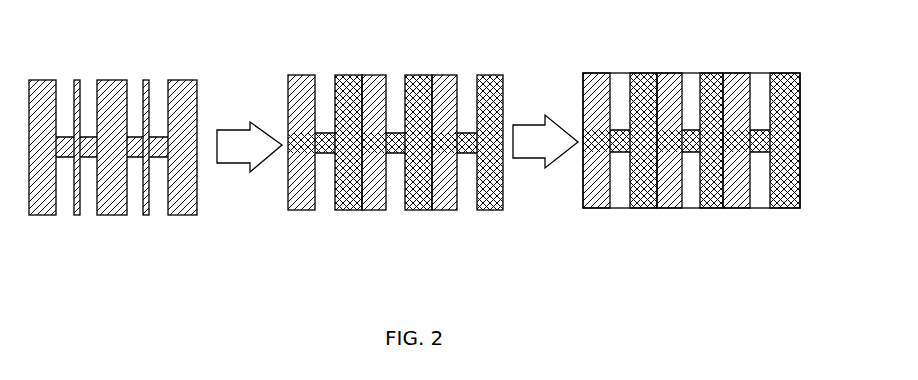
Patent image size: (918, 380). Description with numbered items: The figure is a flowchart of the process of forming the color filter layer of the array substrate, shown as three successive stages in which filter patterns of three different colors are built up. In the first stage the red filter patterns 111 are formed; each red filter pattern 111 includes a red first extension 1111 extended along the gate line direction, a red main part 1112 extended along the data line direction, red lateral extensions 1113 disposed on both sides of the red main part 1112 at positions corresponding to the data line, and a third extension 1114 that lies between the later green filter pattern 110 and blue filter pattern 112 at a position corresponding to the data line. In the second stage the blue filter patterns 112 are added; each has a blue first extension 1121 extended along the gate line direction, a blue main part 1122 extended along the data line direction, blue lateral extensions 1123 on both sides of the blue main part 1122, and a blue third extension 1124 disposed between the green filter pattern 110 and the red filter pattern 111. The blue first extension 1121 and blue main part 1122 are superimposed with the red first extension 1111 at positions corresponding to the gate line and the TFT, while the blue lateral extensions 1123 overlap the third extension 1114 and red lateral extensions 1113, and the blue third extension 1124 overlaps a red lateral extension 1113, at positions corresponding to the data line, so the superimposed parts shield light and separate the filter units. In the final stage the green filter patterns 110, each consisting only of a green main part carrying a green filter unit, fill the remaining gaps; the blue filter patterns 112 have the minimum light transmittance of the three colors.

The green filter pattern 110 is at (620, 82).
The red filter pattern 111 is at (40, 82).
The red first extension 1111 is at (63, 167).
The red main part 1112 is at (154, 146).
The red lateral extension 1113 is at (98, 217).
The third extension 1114 is at (148, 87).
The blue filter pattern 112 is at (487, 73).
The blue first extension 1121 is at (325, 162).
The blue main part 1122 is at (352, 73).
The blue lateral extension 1123 is at (401, 142).
The blue third extension 1124 is at (387, 77).